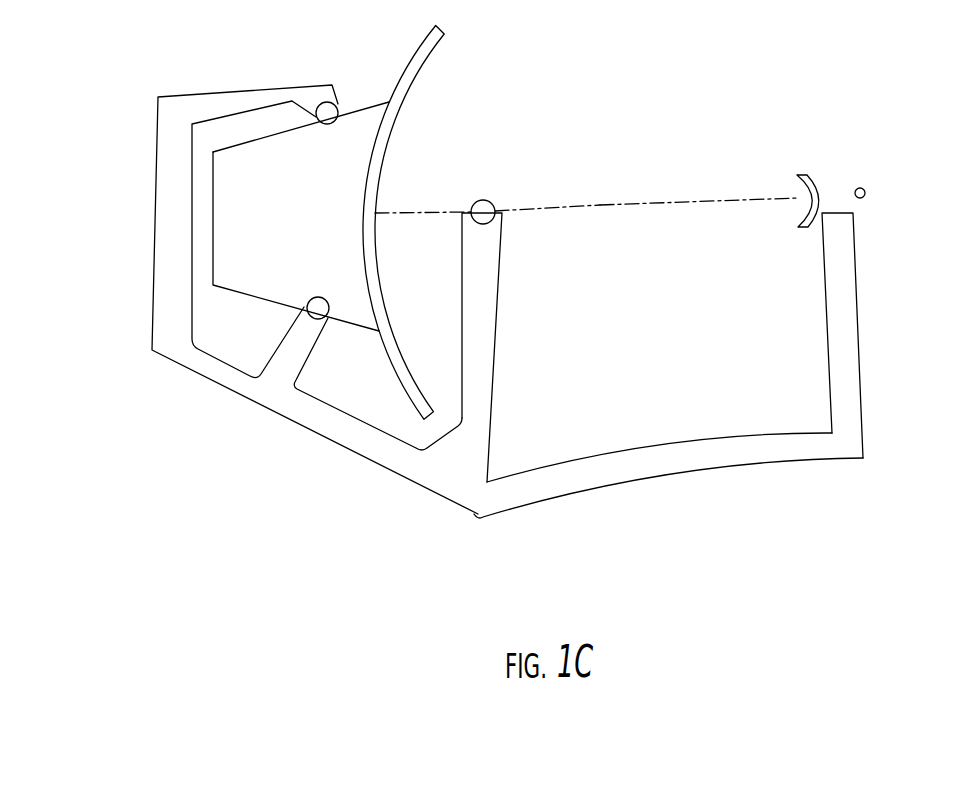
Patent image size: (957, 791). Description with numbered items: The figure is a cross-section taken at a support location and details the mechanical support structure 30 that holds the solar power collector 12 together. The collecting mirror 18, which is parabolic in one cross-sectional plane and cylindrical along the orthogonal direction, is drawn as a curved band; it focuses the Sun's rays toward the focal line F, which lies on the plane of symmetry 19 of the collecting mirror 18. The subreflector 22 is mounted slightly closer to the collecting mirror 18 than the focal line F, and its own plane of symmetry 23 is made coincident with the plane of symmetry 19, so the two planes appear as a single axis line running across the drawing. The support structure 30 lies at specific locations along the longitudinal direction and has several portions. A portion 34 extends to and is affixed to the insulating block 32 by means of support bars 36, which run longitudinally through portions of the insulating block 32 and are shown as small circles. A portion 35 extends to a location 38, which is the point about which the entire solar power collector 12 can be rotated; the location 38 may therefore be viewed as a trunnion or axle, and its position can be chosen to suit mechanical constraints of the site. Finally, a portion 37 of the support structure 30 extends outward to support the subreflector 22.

The solar power collector 12 is at (585, 558).
The collecting mirror 18 is at (425, 47).
The plane of symmetry 19 is at (532, 208).
The subreflector 22 is at (823, 193).
The plane of symmetry 23 is at (737, 198).
The support structure 30 is at (310, 504).
The insulating block 32 is at (267, 287).
The portion 34 is at (208, 380).
The portion 35 is at (483, 325).
The support bars 36 is at (332, 125).
The portion 37 is at (860, 343).
The location 38 is at (492, 228).
The focal line F is at (865, 193).